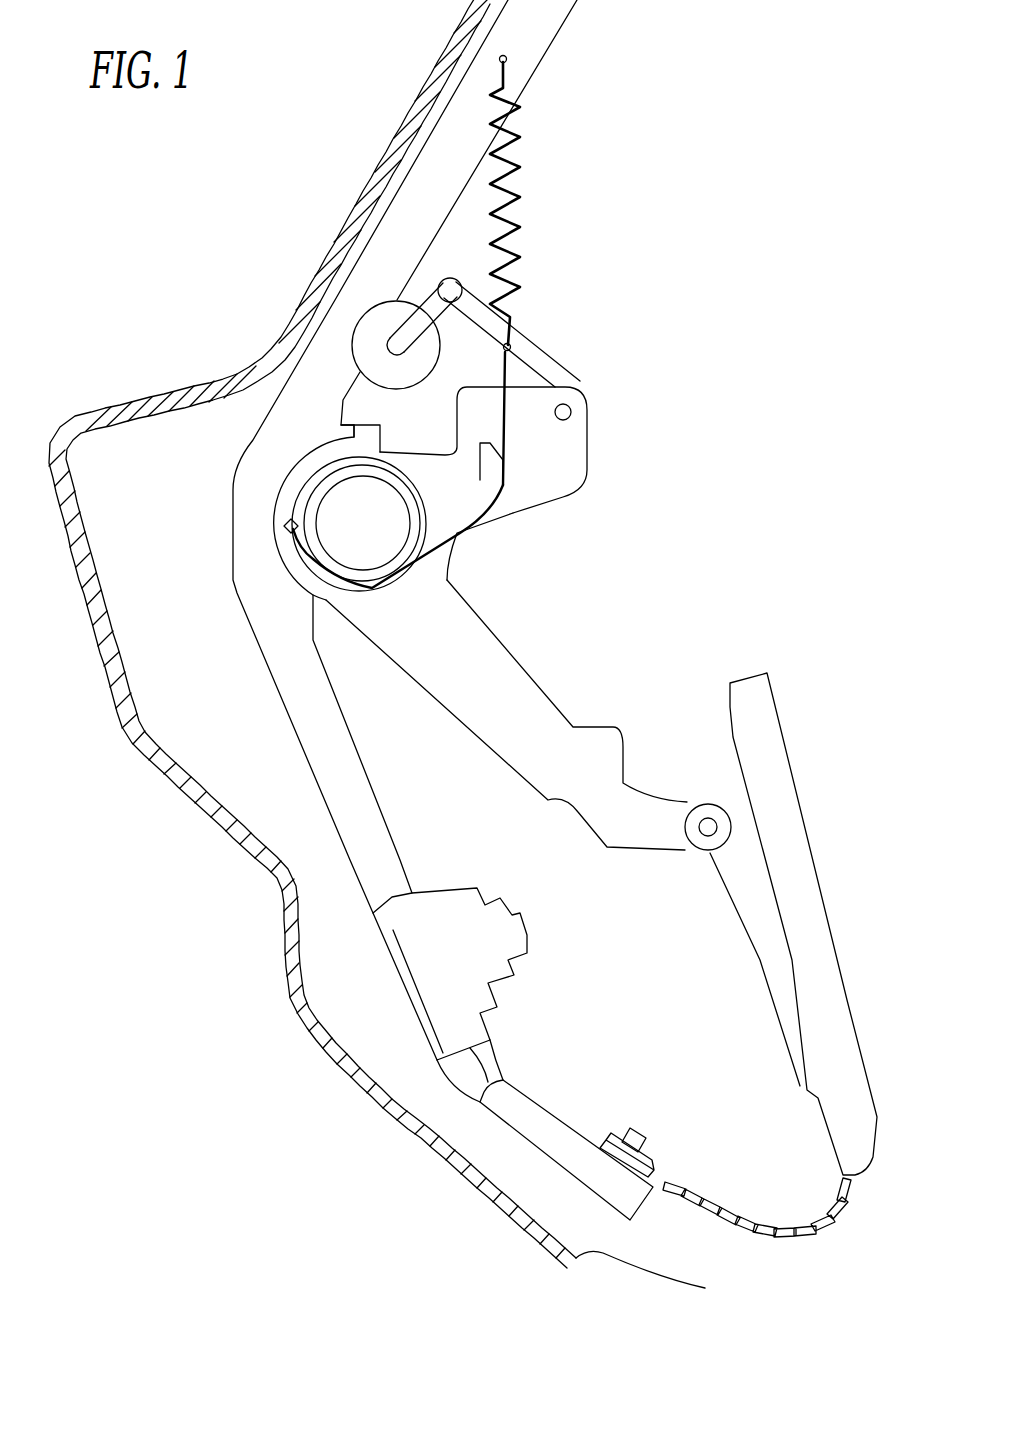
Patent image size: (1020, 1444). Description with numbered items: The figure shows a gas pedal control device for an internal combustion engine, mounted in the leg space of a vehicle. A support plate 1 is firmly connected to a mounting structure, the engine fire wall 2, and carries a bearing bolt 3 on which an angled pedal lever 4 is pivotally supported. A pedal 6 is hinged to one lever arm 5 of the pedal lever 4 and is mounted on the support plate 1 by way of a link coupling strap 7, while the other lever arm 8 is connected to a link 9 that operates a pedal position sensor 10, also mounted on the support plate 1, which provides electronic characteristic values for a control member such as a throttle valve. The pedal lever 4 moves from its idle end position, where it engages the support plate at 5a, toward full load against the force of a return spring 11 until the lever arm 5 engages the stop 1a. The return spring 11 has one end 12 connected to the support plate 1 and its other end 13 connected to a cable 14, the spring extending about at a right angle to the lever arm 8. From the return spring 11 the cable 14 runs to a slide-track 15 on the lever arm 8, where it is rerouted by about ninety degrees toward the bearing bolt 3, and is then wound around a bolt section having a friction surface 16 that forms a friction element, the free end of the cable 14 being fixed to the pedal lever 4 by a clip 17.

The support plate 1 is at (327, 748).
The stop 1a is at (520, 917).
The engine fire wall 2 is at (157, 407).
The bearing bolt 3 is at (340, 507).
The pedal lever 4 is at (505, 627).
The lever arm 5 is at (510, 690).
The engagement location on support plate 5a is at (345, 424).
The pedal 6 is at (760, 716).
The link coupling strap 7 is at (727, 1212).
The lever arm 8 is at (565, 448).
The link 9 is at (527, 365).
The pedal position sensor 10 is at (366, 330).
The return spring 11 is at (519, 178).
The spring end 12 is at (510, 64).
The spring end 13 is at (513, 345).
The cable 14 is at (512, 470).
The slide-track 15 is at (487, 497).
The friction surface 16 is at (400, 493).
The clip 17 is at (288, 532).